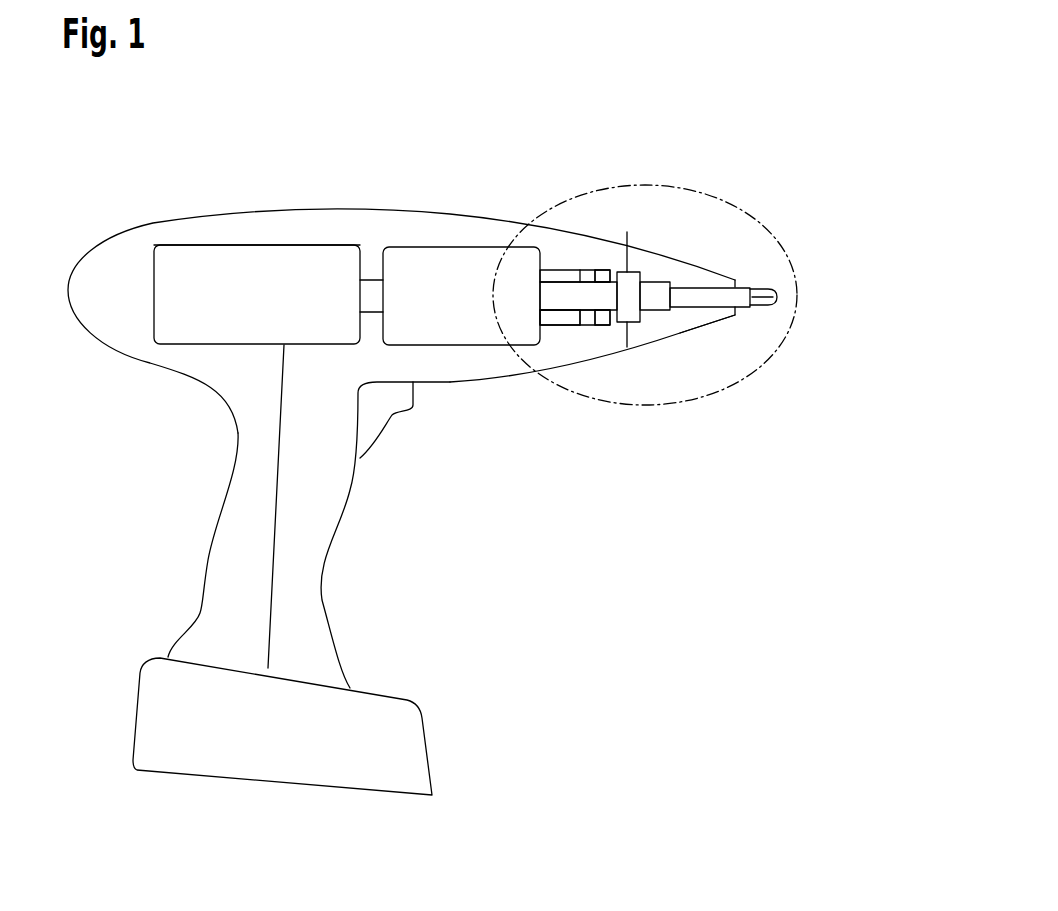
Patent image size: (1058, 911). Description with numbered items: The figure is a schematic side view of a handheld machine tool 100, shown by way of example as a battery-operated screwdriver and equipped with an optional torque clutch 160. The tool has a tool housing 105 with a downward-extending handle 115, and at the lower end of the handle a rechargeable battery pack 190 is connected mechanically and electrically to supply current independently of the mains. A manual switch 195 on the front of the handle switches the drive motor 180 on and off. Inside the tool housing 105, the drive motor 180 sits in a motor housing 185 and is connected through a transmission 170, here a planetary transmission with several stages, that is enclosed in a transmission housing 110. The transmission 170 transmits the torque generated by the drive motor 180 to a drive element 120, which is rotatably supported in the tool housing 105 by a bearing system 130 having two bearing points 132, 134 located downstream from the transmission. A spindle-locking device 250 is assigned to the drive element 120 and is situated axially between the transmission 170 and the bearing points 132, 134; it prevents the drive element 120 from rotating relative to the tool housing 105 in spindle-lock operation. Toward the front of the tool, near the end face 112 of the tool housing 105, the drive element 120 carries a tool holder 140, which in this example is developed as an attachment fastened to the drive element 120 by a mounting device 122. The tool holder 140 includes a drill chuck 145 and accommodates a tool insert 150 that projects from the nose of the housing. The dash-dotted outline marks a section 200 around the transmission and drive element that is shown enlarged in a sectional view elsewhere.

The handheld machine tool 100 is at (712, 91).
The tool housing 105 is at (105, 287).
The transmission housing 110 is at (398, 247).
The end face 112 is at (627, 234).
The handle 115 is at (223, 542).
The drive element 120 is at (557, 297).
The mounting device 122 is at (657, 313).
The bearing system 130 is at (597, 333).
The bearing point 132 is at (580, 325).
The bearing point 134 is at (597, 270).
The tool holder 140 is at (703, 315).
The drill chuck 145 is at (728, 322).
The tool insert 150 is at (743, 290).
The torque clutch 160 is at (611, 333).
The transmission 170 is at (458, 260).
The drive motor 180 is at (252, 263).
The motor housing 185 is at (318, 245).
The rechargeable battery pack 190 is at (153, 712).
The manual switch 195 is at (370, 438).
The section 200 is at (720, 197).
The spindle-locking device 250 is at (568, 270).